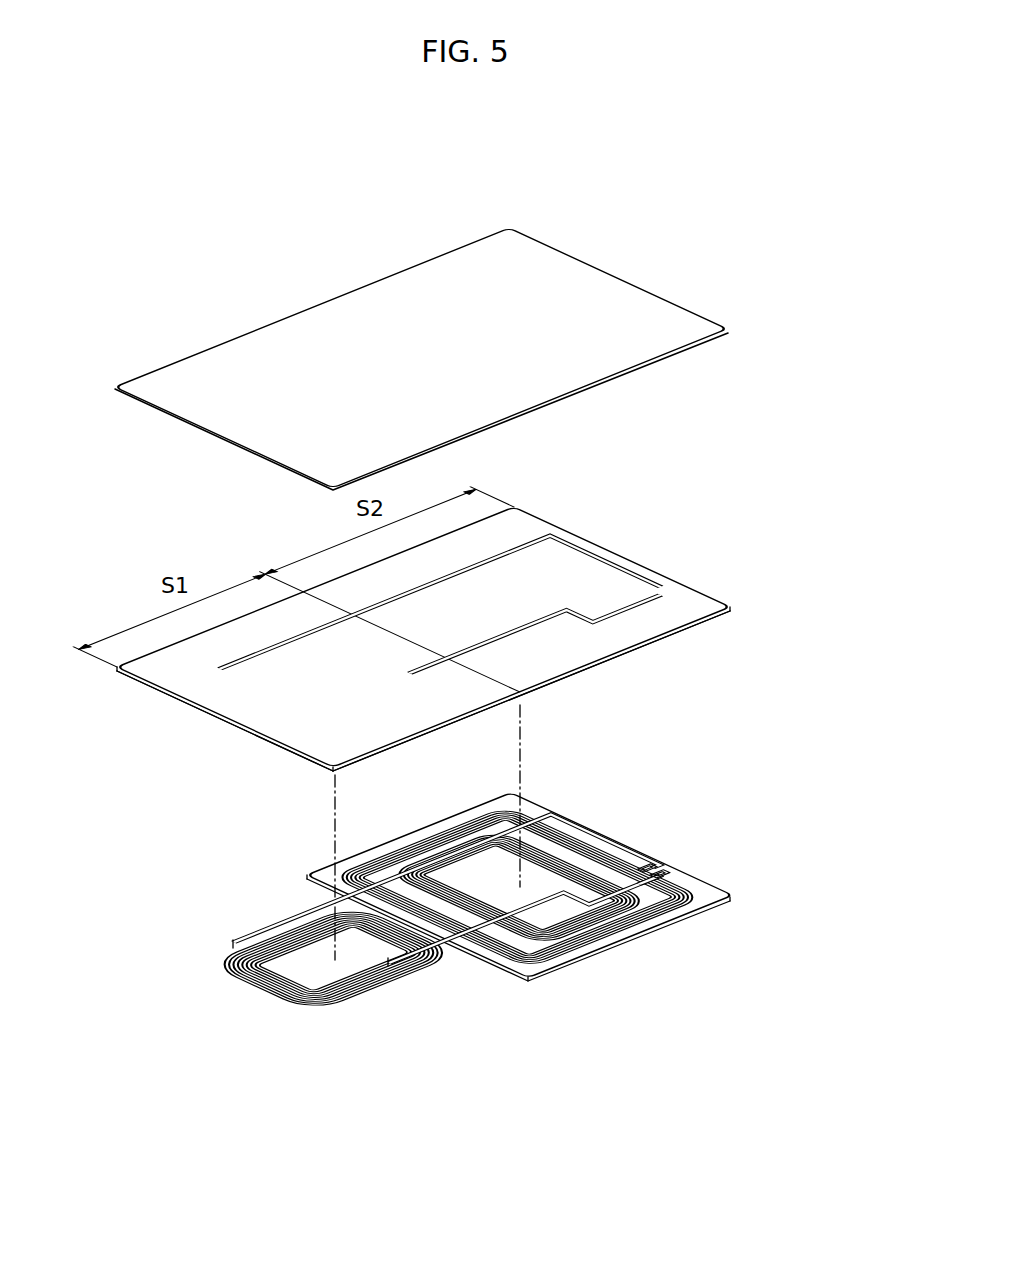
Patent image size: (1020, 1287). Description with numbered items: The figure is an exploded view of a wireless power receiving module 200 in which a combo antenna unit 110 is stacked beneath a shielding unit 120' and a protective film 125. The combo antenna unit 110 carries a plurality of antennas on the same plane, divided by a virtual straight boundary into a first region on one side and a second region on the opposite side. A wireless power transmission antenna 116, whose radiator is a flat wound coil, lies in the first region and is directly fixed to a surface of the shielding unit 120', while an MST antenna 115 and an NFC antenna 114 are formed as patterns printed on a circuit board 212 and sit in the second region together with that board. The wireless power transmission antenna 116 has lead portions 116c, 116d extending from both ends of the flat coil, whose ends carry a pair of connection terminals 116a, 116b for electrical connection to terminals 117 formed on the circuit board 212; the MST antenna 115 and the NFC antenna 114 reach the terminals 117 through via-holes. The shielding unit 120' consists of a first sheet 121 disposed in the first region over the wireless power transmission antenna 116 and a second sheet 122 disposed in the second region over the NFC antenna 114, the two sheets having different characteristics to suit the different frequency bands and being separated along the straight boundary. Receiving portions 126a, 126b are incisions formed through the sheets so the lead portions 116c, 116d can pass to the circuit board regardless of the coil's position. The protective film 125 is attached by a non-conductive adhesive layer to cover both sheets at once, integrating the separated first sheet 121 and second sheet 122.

The wireless power receiving module 200 is at (385, 183).
The protective film 125 is at (633, 293).
The shielding unit 120' is at (407, 622).
The first sheet 121 is at (240, 713).
The second sheet 122 is at (592, 660).
The receiving portion 126a is at (520, 548).
The receiving portion 126b is at (630, 610).
The combo antenna unit 110 is at (708, 860).
The circuit board 212 is at (710, 892).
The NFC antenna 114 is at (660, 923).
The MST antenna 115 is at (608, 927).
The wireless power transmission antenna 116 is at (363, 995).
The connection terminal 116a is at (640, 862).
The connection terminal 116b is at (667, 880).
The lead portion 116c is at (522, 818).
The lead portion 116d is at (530, 910).
The terminals 117 is at (665, 860).